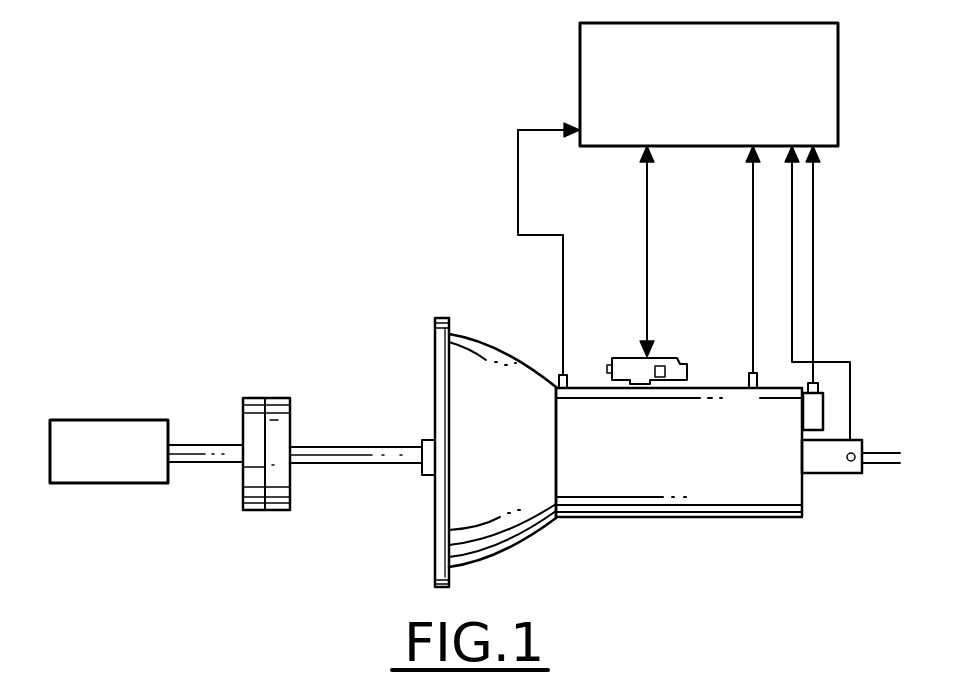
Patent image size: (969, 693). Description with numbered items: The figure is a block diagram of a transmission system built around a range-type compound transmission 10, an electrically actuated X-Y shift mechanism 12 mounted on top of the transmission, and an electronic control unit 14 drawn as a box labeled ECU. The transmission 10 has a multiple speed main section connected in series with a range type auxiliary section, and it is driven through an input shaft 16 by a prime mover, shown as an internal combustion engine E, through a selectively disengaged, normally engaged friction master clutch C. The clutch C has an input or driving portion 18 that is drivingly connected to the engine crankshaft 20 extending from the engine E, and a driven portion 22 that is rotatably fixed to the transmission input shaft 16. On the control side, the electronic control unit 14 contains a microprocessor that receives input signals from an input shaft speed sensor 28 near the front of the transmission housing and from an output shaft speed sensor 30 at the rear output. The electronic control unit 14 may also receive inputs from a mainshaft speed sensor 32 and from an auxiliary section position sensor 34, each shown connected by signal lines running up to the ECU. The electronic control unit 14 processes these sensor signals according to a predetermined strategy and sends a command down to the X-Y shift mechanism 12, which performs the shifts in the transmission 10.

The transmission 10 is at (690, 518).
The X-Y shift mechanism 12 is at (672, 358).
The electronic control unit 14 is at (572, 67).
The input shaft 16 is at (396, 447).
The input or driving portion 18 is at (255, 510).
The engine crankshaft 20 is at (195, 443).
The driven portion 22 is at (280, 510).
The input shaft speed sensor 28 is at (561, 374).
The output shaft speed sensor 30 is at (852, 462).
The mainshaft speed sensor 32 is at (748, 372).
The auxiliary section position sensor 34 is at (818, 384).
The friction master clutch C is at (265, 398).
The internal combustion engine E is at (90, 420).